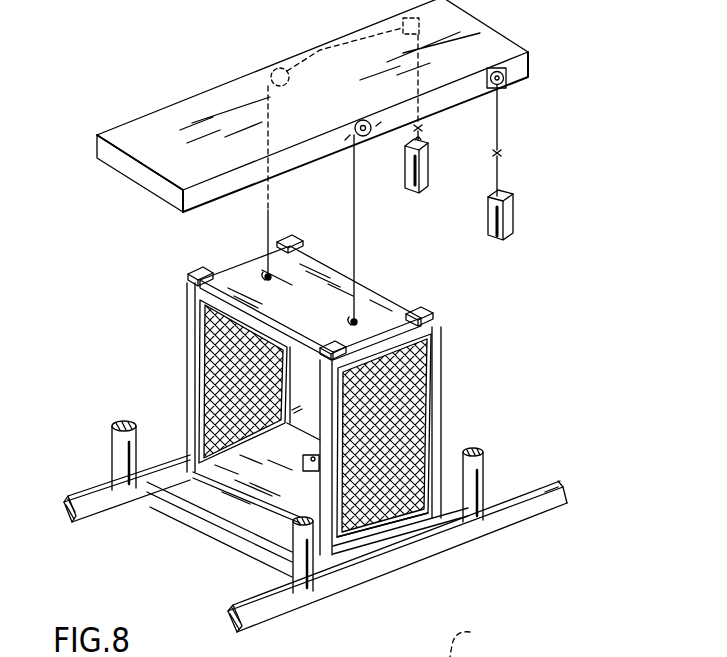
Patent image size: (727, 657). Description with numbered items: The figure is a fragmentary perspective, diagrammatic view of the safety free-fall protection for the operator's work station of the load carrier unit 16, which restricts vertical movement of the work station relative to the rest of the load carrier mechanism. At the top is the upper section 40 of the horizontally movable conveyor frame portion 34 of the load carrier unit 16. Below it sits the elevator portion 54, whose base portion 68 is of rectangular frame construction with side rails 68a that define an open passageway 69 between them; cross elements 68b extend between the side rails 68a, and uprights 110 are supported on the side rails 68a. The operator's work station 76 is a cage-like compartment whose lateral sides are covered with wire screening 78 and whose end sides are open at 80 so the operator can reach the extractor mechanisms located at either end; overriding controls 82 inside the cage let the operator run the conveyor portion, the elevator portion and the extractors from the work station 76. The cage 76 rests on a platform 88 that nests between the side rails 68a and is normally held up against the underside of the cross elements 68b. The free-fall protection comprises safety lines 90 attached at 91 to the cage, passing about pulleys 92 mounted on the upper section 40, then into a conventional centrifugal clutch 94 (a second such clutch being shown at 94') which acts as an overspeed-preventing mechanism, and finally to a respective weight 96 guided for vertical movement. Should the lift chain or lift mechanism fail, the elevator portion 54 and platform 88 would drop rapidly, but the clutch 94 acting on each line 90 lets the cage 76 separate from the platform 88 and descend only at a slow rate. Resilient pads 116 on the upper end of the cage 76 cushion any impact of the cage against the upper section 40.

The load carrier unit 16 is at (349, 328).
The conveyor frame portion 34 is at (322, 328).
The upper section 40 is at (497, 32).
The elevator portion 54 is at (292, 612).
The base portion 68 is at (316, 534).
The side rails 68a is at (555, 531).
The cross elements 68b is at (187, 517).
The passageway 69 is at (197, 585).
The operator's work station 76 is at (323, 382).
The wire screening 78 is at (232, 350).
The open end side 80 is at (303, 378).
The overriding controls 82 is at (303, 466).
The platform 88 is at (437, 525).
The safety lines 90 is at (269, 203).
The attachment point 91 is at (266, 276).
The pulleys 92 is at (280, 68).
The centrifugal clutch 94 is at (525, 90).
The pulley 94' is at (483, 639).
The weight 96 is at (428, 176).
The uprights 110 is at (120, 422).
The resilient pads 116 is at (289, 240).